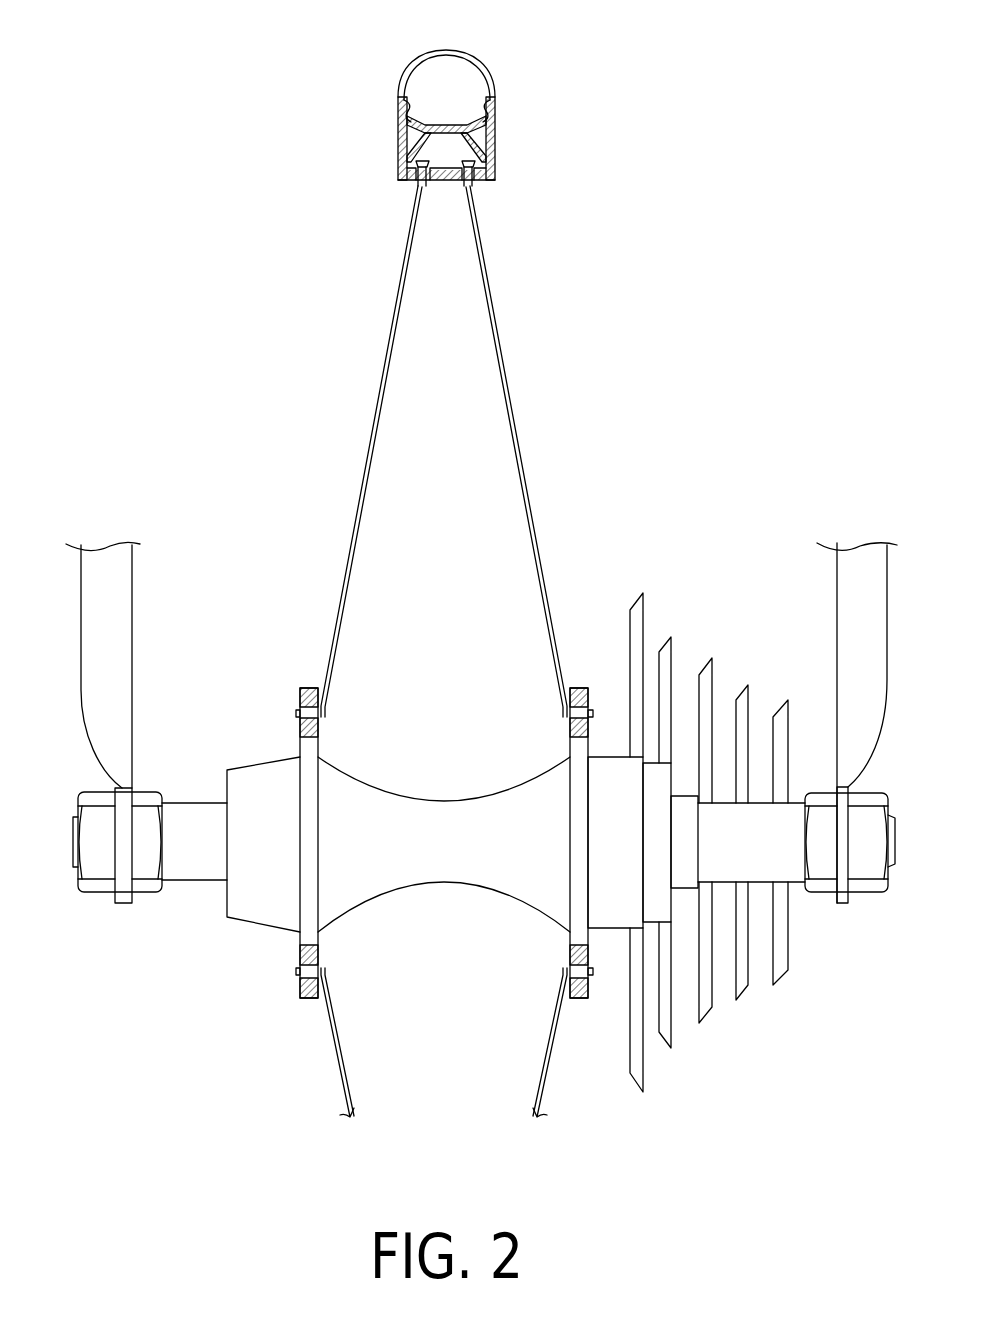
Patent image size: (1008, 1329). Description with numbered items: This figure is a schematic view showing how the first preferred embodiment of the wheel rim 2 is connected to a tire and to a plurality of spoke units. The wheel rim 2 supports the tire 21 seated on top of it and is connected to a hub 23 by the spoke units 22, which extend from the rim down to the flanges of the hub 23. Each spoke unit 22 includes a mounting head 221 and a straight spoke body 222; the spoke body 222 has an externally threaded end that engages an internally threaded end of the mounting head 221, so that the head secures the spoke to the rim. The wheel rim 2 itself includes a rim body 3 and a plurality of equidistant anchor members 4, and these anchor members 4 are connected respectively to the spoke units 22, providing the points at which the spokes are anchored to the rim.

The wheel rim 2 is at (462, 136).
The tire 21 is at (462, 52).
The spoke unit 22 is at (424, 651).
The mounting head 221 is at (404, 168).
The straight spoke body 222 is at (391, 330).
The hub 23 is at (470, 866).
The rim body 3 is at (496, 164).
The anchor member 4 is at (400, 157).